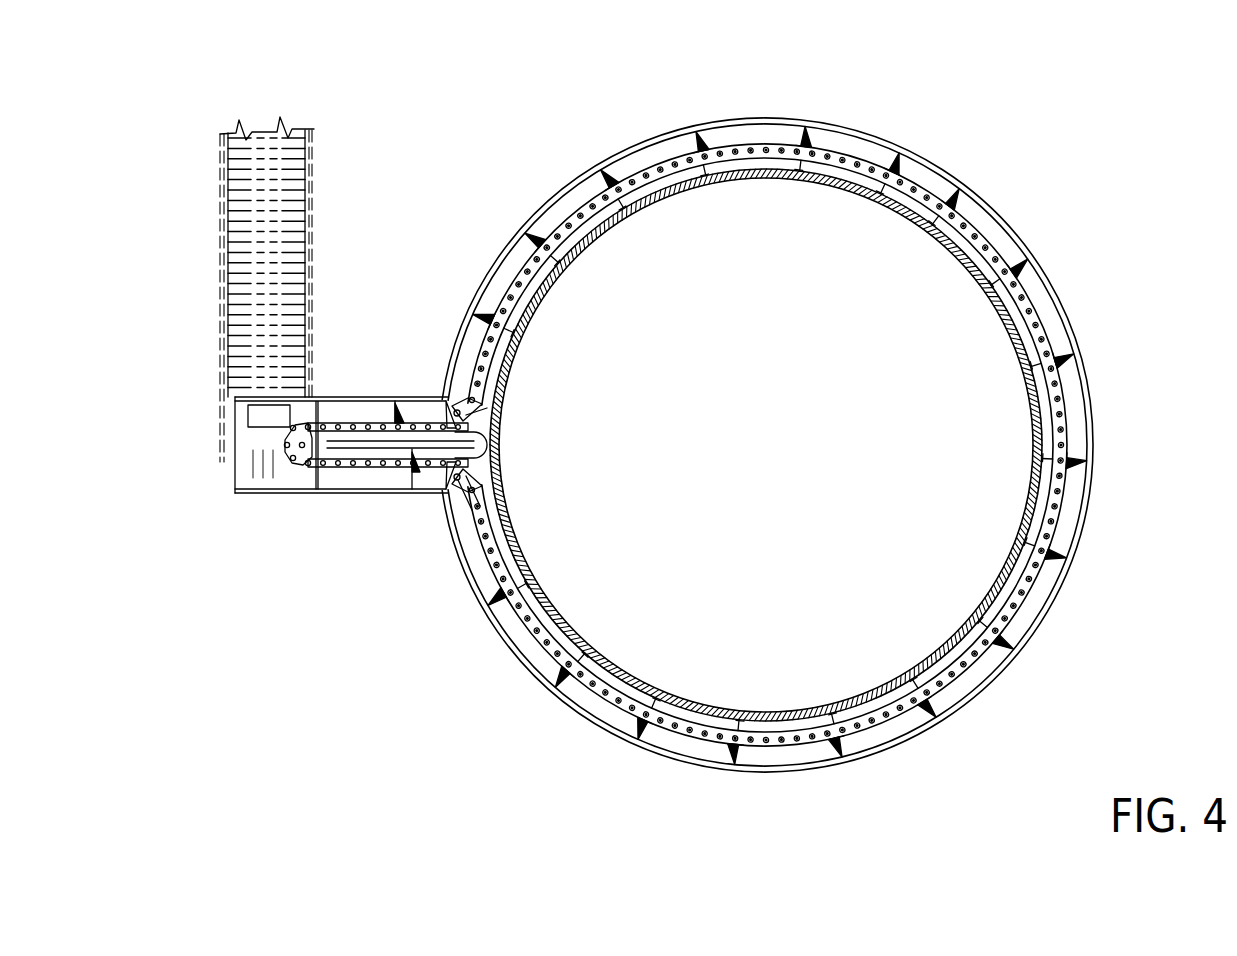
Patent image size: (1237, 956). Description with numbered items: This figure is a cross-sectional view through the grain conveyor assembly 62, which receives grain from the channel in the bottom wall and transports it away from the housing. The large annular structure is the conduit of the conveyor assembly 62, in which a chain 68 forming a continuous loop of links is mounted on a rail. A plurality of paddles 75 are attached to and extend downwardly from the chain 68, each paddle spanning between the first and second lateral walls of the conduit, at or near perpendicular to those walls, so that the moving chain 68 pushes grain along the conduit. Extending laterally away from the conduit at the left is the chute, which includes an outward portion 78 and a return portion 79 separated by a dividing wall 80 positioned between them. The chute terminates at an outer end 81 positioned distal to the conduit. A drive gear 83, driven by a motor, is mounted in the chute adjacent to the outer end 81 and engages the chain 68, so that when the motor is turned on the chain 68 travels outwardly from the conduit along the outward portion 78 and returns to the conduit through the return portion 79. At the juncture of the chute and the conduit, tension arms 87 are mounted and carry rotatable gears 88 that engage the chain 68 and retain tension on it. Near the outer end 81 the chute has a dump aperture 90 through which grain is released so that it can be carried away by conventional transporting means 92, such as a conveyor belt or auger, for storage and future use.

The conveyor assembly 62 is at (776, 481).
The chain 68 is at (419, 420).
The paddles 75 is at (392, 420).
The outward portion 78 is at (337, 490).
The return portion 79 is at (340, 410).
The dividing wall 80 is at (360, 449).
The outer end 81 is at (236, 490).
The drive gear 83 is at (288, 441).
The tension arms 87 is at (457, 402).
The rotatable gears 88 is at (470, 428).
The dump aperture 90 is at (257, 416).
The transporting means 92 is at (265, 178).